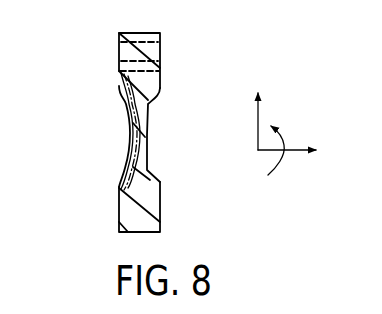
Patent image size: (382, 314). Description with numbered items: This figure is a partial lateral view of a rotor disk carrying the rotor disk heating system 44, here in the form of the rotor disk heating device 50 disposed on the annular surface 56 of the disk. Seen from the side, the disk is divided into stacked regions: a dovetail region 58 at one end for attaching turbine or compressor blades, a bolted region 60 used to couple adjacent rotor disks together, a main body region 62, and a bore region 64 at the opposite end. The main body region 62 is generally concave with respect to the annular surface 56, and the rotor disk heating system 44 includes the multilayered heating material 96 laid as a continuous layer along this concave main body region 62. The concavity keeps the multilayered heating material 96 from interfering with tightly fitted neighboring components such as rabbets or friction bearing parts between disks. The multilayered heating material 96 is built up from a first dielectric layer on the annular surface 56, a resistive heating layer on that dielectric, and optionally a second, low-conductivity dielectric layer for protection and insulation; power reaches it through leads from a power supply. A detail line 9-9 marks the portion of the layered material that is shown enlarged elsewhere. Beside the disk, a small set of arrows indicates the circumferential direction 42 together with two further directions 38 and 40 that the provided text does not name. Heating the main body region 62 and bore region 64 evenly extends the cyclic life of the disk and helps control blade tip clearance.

The line 9- 9 is at (113, 78).
The longitudinal axis 38 is at (290, 152).
The radial axis 40 is at (258, 123).
The circumferential direction 42 is at (282, 140).
The rotor disk heating system 44 is at (94, 136).
The rotor disk heating device 50 is at (101, 155).
The annular surface 56 is at (120, 73).
The dovetail region 58 is at (179, 33).
The bolted region 60 is at (179, 53).
The main body region 62 is at (179, 91).
The bore region 64 is at (179, 190).
The multilayered heating material 96 is at (128, 145).